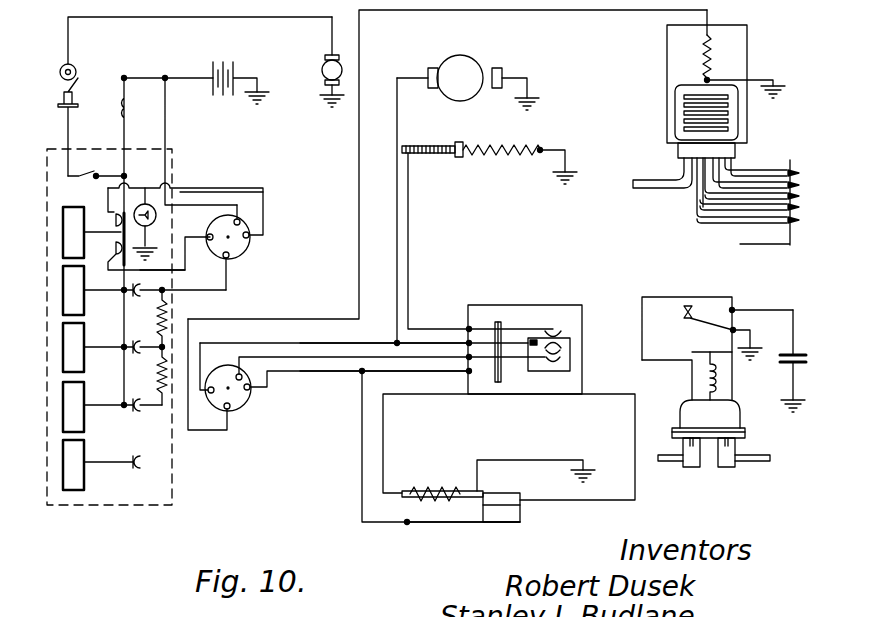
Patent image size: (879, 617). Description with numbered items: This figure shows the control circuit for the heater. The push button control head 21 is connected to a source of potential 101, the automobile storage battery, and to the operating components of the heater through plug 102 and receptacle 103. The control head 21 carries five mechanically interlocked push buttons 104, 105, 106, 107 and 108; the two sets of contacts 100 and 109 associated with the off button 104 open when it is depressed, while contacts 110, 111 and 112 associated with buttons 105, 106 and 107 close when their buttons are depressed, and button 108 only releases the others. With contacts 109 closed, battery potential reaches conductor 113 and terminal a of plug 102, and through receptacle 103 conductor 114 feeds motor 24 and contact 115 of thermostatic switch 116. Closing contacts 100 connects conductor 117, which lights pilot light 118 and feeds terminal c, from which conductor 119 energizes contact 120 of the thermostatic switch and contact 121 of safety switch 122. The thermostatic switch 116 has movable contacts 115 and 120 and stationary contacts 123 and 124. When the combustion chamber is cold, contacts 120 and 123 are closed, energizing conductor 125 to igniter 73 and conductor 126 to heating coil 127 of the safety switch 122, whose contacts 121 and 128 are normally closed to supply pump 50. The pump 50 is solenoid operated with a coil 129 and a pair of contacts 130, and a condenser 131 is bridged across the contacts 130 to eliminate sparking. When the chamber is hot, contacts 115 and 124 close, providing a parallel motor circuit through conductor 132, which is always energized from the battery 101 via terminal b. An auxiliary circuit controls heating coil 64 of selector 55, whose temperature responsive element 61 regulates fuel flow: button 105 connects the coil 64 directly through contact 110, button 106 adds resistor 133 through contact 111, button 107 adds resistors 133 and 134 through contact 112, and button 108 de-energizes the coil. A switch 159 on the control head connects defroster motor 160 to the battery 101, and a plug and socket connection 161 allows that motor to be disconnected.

The push button control head 21 is at (171, 491).
The motor 24 is at (483, 70).
The pump 50 is at (735, 412).
The selector 55 is at (747, 50).
The temperature responsive element 61 is at (728, 113).
The heating coil 64 is at (705, 52).
The igniter 73 is at (498, 148).
The contacts 100 is at (116, 212).
The source of potential 101 is at (219, 93).
The plug 102 is at (248, 253).
The receptacle 103 is at (245, 405).
The push button 104 is at (63, 208).
The push button 105 is at (63, 272).
The push button 106 is at (63, 338).
The push button 107 is at (63, 396).
The push button 108 is at (63, 455).
The contacts 109 is at (114, 260).
The contact 110 is at (138, 297).
The contact 111 is at (138, 353).
The contact 112 is at (140, 411).
The conductor 113 is at (188, 268).
The conductor 114 is at (366, 343).
The movable contact 115 is at (556, 355).
The thermostatic switch 116 is at (502, 325).
The conductor 117 is at (232, 190).
The pilot light 118 is at (152, 224).
The conductor 119 is at (340, 372).
The movable contact 120 is at (560, 345).
The contact 121 is at (520, 520).
The safety switch 122 is at (450, 517).
The stationary contact 123 is at (556, 330).
The stationary contact 124 is at (575, 359).
The conductor 125 is at (408, 240).
The conductor 126 is at (425, 397).
The heating coil 127 is at (420, 488).
The contact 128 is at (500, 490).
The coil 129 is at (706, 377).
The contacts 130 is at (688, 314).
The condenser 131 is at (786, 364).
The conductor 132 is at (296, 343).
The resistor 133 is at (165, 322).
The resistor 134 is at (157, 387).
The switch 159 is at (88, 170).
The motor 160 is at (322, 78).
The plug and socket connection 161 is at (80, 72).